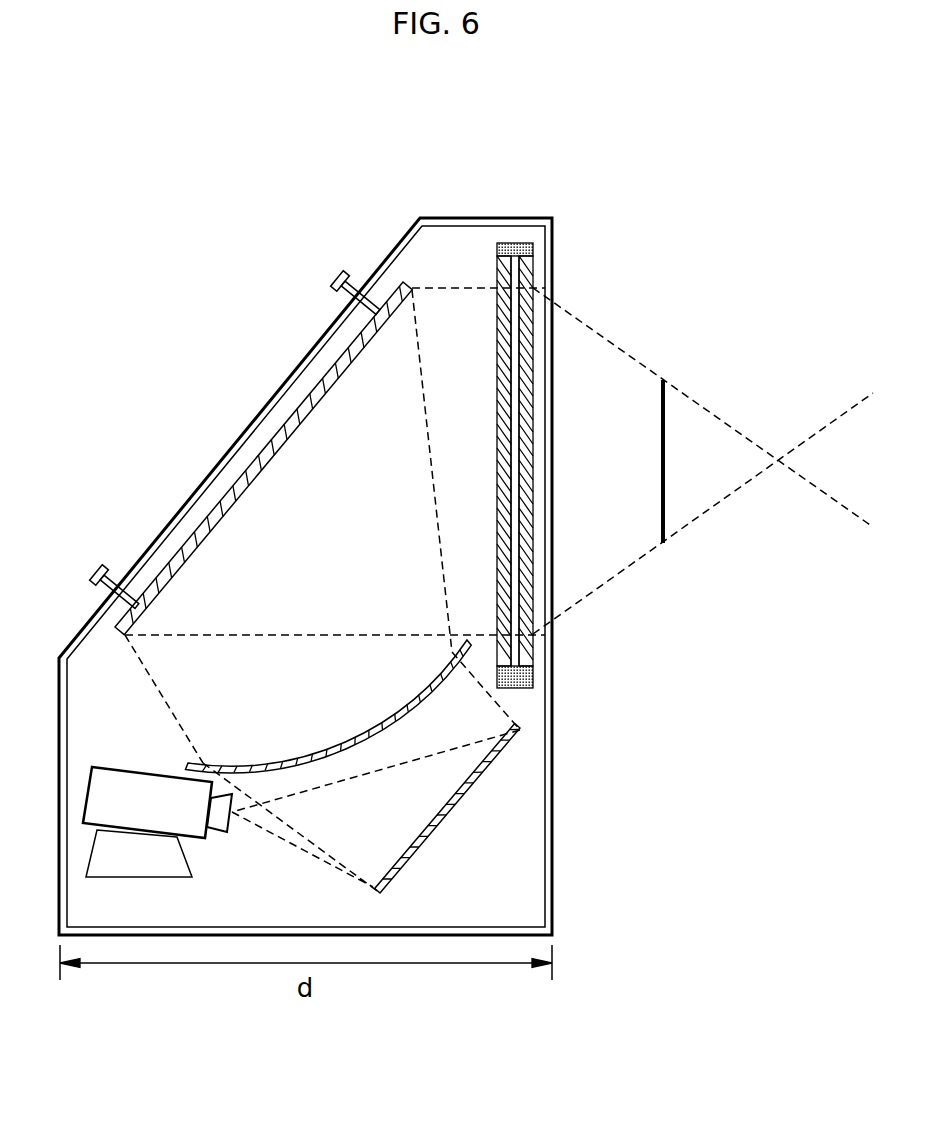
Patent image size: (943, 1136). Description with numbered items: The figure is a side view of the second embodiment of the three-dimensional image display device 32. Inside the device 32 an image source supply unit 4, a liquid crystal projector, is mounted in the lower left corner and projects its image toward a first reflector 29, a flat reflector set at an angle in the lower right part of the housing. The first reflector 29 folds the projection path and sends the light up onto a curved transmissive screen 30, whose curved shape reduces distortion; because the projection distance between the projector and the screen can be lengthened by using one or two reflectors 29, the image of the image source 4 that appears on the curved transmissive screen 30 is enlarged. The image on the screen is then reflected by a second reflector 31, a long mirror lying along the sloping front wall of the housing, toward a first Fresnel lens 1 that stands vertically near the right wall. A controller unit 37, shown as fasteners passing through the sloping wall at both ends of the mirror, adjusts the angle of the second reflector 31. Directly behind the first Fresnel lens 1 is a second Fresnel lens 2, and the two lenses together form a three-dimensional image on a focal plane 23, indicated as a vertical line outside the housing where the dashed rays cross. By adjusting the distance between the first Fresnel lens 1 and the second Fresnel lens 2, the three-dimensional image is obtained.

The first Fresnel lens 1 is at (496, 330).
The second Fresnel lens 2 is at (533, 346).
The image source supply unit 4 is at (87, 796).
The focal plane 23 is at (666, 386).
The first reflector 29 is at (457, 811).
The curved transmissive screen 30 is at (357, 737).
The second reflector 31 is at (284, 423).
The three-dimensional image display device 32 is at (204, 481).
The controller unit 37 is at (341, 271).